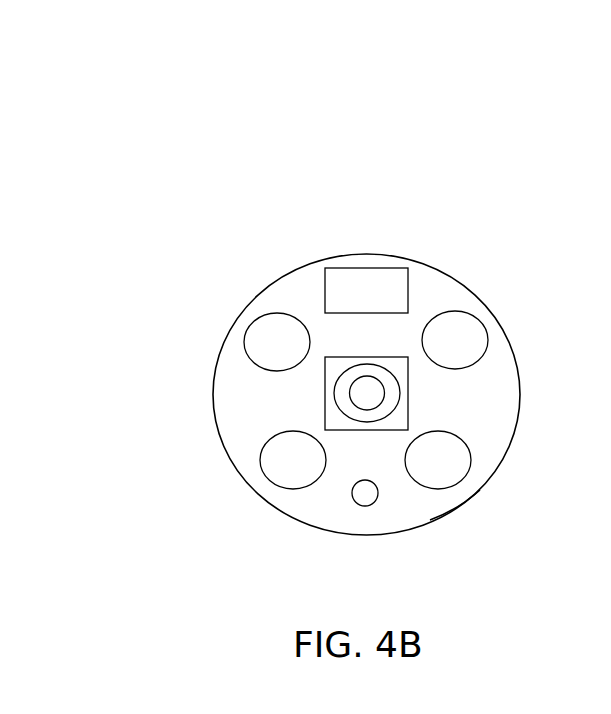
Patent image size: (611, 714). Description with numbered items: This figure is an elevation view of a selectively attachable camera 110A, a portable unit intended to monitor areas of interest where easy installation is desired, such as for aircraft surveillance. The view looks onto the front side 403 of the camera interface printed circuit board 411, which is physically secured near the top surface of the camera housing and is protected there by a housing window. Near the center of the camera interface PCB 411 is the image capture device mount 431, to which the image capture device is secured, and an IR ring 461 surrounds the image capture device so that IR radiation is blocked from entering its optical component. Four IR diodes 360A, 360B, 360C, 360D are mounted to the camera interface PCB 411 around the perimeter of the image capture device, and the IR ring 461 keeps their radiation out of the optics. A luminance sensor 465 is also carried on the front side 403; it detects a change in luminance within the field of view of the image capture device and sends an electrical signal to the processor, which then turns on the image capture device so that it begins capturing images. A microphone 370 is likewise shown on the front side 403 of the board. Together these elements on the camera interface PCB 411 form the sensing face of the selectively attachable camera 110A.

The selectively attachable camera 110A is at (484, 86).
The front side of camera interface PCB 403 is at (477, 255).
The camera interface printed circuit board 411 is at (461, 512).
The microphone 370 is at (365, 268).
The IR diode 360A is at (244, 343).
The IR diode 360B is at (260, 460).
The IR diode 360C is at (472, 460).
The IR diode 360D is at (488, 340).
The image capture device mount 431 is at (408, 392).
The IR ring 461 is at (335, 384).
The luminance sensor 465 is at (365, 507).